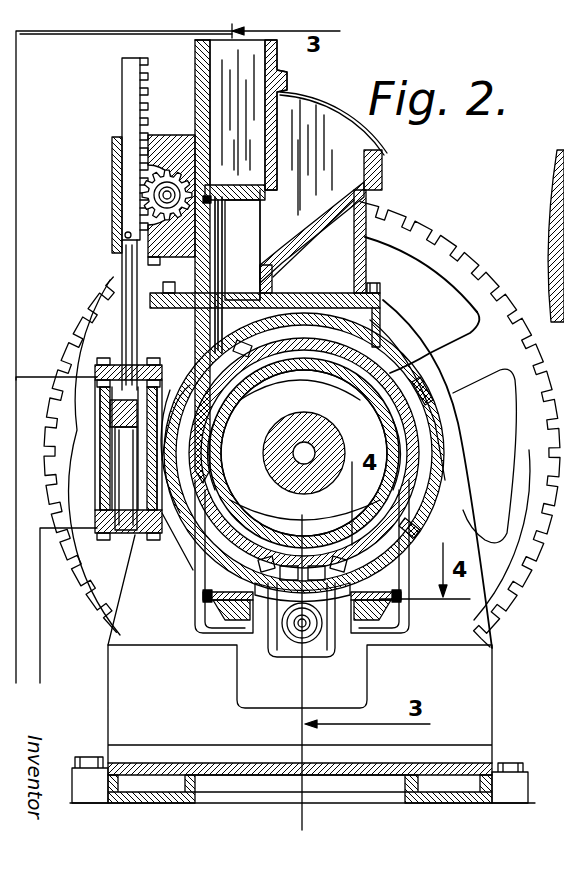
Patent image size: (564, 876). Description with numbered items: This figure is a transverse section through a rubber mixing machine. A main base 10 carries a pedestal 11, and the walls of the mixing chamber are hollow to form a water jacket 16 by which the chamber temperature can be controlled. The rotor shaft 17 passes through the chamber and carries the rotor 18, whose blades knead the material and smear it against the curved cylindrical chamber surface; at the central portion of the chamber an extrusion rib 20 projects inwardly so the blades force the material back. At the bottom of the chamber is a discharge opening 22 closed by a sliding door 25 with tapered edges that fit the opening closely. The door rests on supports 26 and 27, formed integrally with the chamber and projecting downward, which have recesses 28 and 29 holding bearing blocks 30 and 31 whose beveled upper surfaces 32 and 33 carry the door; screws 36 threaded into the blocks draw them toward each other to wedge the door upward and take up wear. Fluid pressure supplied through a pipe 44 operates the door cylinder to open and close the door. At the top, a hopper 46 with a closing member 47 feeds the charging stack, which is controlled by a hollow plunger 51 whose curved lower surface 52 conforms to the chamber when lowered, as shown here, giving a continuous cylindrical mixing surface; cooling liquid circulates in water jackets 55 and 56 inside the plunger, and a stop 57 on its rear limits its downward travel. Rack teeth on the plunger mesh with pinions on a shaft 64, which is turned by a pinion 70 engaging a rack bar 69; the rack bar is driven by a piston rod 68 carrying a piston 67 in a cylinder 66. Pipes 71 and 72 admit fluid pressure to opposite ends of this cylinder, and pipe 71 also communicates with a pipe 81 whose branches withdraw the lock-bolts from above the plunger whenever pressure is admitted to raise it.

The main base 10 is at (245, 788).
The pedestal 11 is at (117, 682).
The water jacket 16 is at (392, 370).
The rotor shaft 17 is at (335, 452).
The rotor 18 is at (395, 450).
The extrusion rib 20 is at (325, 355).
The discharge opening 22 is at (412, 527).
The sliding door 25 is at (283, 587).
The support 26 is at (227, 615).
The support 27 is at (380, 603).
The recess 28 is at (207, 592).
The recess 29 is at (397, 600).
The bearing block 30 is at (235, 594).
The bearing block 31 is at (358, 622).
The beveled surface 32 is at (288, 566).
The beveled surface 33 is at (332, 564).
The screw 36 is at (208, 597).
The pipe 44 is at (303, 652).
The hopper 46 is at (346, 156).
The closing member 47 is at (332, 103).
The plunger 51 is at (209, 199).
The curved lower surface 52 is at (228, 382).
The water jacket 55 is at (267, 352).
The water jacket 56 is at (236, 342).
The stop 57 is at (237, 275).
The shaft 64 is at (166, 194).
The cylinder 66 is at (113, 465).
The piston 67 is at (110, 408).
The piston rod 68 is at (128, 260).
The rack bar 69 is at (127, 203).
The pinion 70 is at (143, 208).
The pipe 71 is at (35, 377).
The pipe 72 is at (85, 533).
The pipe 81 is at (20, 275).